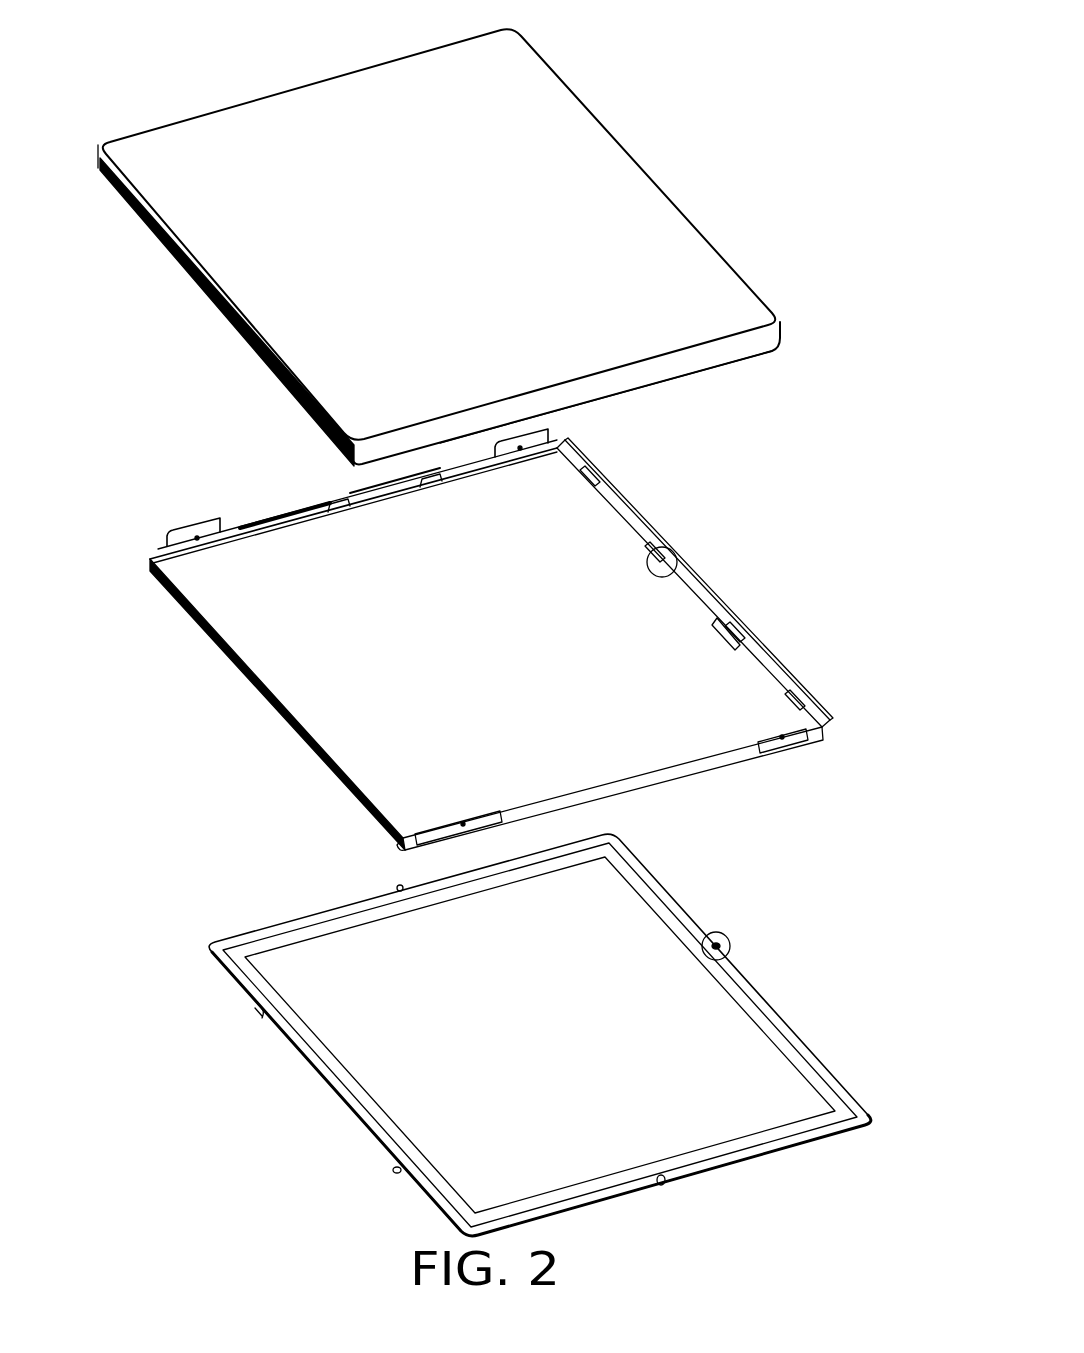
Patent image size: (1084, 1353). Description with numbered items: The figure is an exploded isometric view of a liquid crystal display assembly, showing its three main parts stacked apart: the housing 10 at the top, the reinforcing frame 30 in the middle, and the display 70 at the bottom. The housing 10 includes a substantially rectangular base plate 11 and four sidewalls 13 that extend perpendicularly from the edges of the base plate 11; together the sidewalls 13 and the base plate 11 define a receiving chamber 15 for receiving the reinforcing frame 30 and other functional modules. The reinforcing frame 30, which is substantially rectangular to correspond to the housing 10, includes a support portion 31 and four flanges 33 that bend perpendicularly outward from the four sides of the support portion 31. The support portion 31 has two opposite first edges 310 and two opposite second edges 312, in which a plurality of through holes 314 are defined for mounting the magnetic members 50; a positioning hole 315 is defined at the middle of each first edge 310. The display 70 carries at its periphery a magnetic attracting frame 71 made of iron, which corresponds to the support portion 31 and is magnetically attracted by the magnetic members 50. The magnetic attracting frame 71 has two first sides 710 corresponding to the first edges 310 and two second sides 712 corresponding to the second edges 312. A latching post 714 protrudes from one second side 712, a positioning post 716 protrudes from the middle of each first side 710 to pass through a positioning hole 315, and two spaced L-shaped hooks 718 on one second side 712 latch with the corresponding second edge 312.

The housing 10 is at (488, 247).
The base plate 11 is at (735, 297).
The sidewalls 13 is at (752, 345).
The receiving chamber 15 is at (676, 385).
The reinforcing frame 30 is at (509, 639).
The support portion 31 is at (605, 480).
The flanges 33 is at (628, 508).
The first edges 310 is at (305, 520).
The second edges 312 is at (722, 618).
The through holes 314 is at (770, 668).
The positioning hole 315 is at (345, 505).
The magnetic members 50 is at (748, 642).
The display 70 is at (480, 1025).
The magnetic attracting frame 71 is at (480, 1035).
The first sides 710 is at (270, 928).
The second sides 712 is at (258, 1011).
The latching post 714 is at (764, 934).
The positioning post 716 is at (664, 1184).
The L-shaped hooks 718 is at (392, 1170).